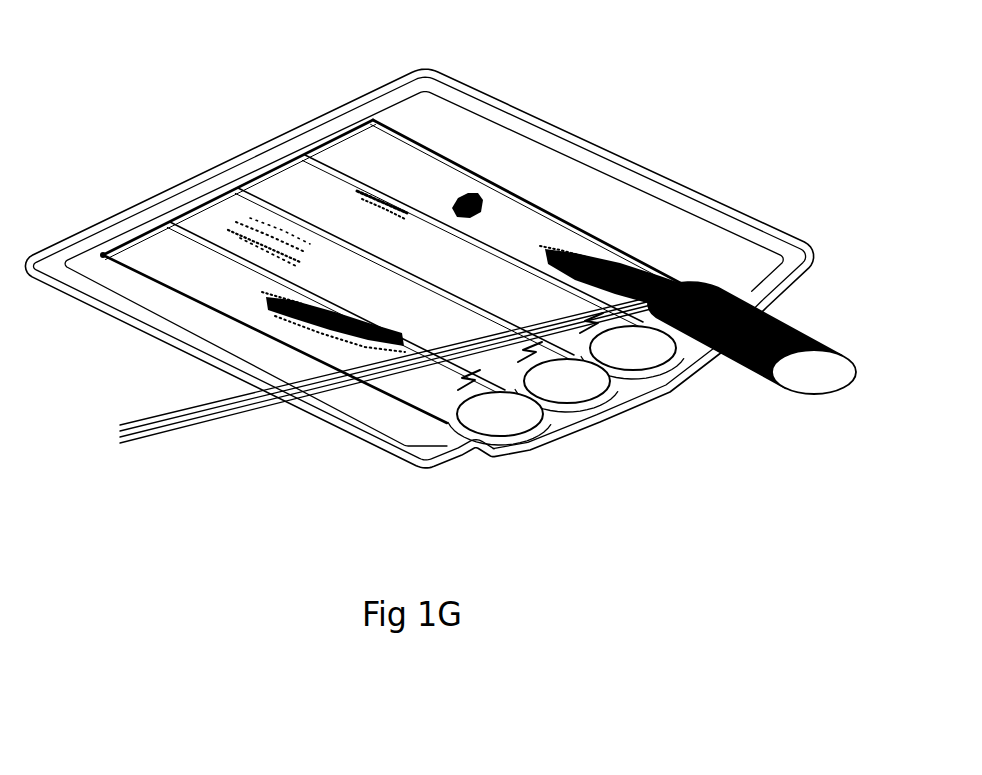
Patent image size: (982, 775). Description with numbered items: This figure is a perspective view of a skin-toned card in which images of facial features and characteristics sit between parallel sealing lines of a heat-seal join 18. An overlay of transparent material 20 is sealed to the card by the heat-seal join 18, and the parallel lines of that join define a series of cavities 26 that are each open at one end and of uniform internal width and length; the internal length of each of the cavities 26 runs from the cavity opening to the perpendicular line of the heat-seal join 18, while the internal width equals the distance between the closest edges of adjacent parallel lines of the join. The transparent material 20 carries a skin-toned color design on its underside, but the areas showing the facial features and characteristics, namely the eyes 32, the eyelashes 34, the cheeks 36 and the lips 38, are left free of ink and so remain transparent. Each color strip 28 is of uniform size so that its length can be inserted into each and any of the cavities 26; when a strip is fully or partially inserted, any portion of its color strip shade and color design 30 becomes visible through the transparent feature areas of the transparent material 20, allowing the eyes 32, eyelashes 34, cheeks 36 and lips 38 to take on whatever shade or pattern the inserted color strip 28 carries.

The heat-seal join 18 is at (127, 243).
The overlay of transparent material 20 is at (608, 178).
The cavities open at one end 26 is at (113, 445).
The color strip 28 is at (813, 372).
The color strip shade and color design 30 is at (677, 272).
The facial features-eyes 32 is at (545, 248).
The facial features-eyelashes 34 is at (347, 183).
The facial features-cheeks 36 is at (262, 240).
The facial features-lips 38 is at (270, 304).